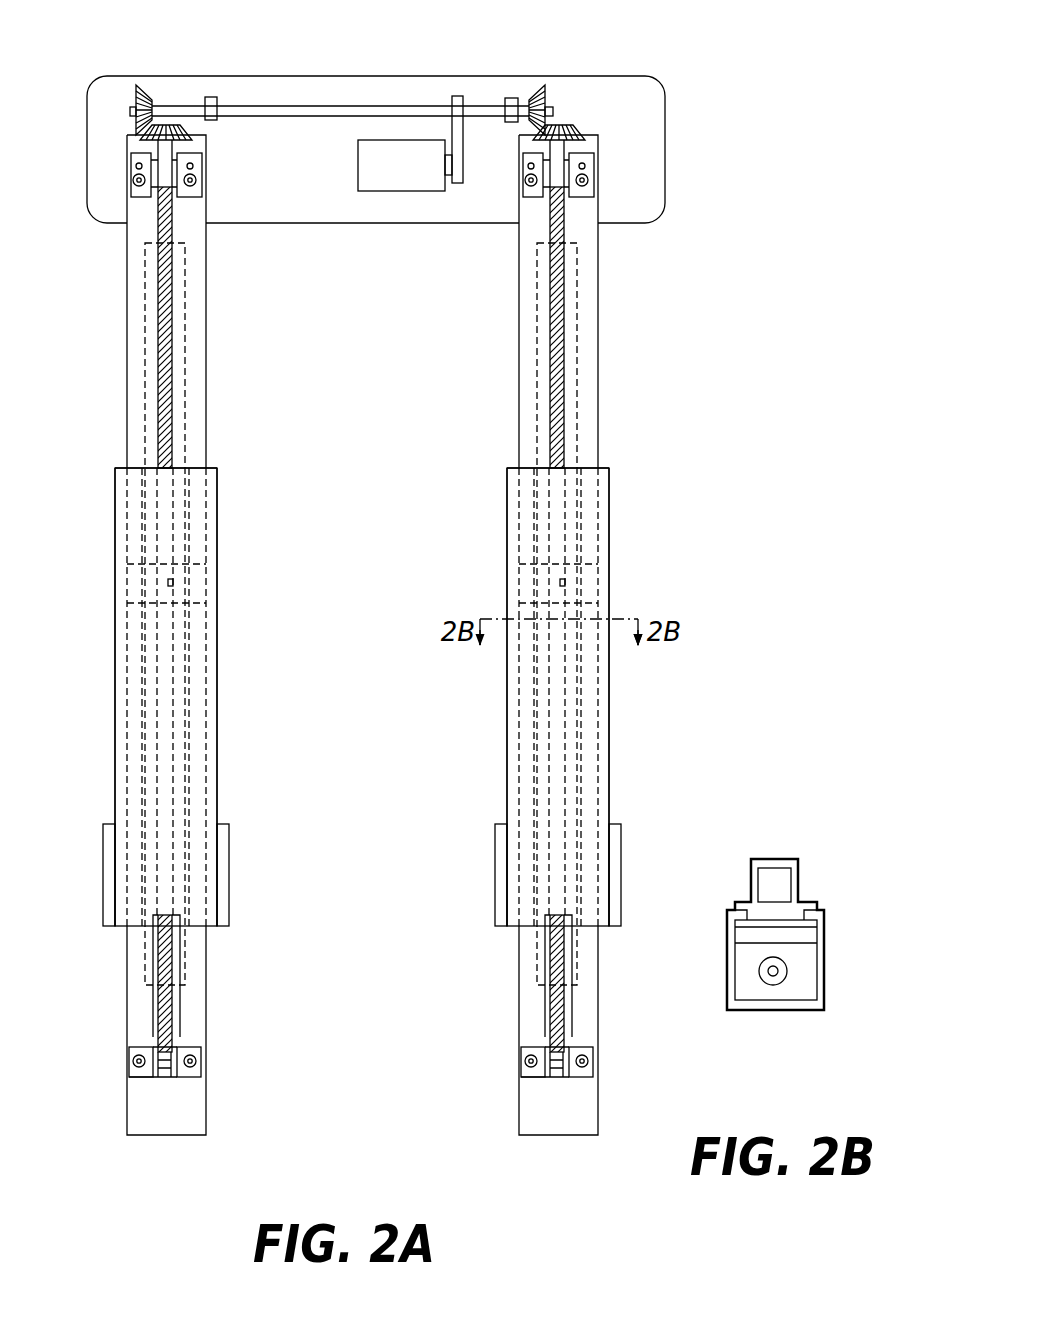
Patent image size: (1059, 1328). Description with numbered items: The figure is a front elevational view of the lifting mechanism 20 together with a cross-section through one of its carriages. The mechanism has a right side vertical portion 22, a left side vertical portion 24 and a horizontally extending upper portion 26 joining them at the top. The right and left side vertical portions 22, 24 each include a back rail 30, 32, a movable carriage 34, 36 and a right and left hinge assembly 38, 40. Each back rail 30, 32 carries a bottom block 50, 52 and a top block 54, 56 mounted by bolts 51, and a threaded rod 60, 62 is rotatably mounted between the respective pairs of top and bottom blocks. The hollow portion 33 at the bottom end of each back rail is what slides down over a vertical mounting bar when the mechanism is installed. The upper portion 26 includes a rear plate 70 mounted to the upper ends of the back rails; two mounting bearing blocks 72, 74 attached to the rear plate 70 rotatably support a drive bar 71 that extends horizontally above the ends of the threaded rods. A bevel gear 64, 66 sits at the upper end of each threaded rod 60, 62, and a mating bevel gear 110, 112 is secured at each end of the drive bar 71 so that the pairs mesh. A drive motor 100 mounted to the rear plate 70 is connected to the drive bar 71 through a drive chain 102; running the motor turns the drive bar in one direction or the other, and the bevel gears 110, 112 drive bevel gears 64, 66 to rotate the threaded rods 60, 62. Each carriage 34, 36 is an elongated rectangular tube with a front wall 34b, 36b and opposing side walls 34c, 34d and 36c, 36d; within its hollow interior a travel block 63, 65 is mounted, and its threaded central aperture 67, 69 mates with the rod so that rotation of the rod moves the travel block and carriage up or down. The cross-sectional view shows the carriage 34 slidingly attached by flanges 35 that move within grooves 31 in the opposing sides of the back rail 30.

In FIG. 2A, the lifting mechanism 20 is at (392, 1075).
In FIG. 2A, the right side vertical portion 22 is at (484, 510).
In FIG. 2A, the left side vertical portion 24 is at (285, 740).
In FIG. 2A, the horizontally extending upper portion 26 is at (695, 115).
In FIG. 2A, the back rail 30 is at (526, 1030).
In FIG. 2B, the back rail 30 is at (800, 877).
In FIG. 2B, the grooves 31 is at (818, 906).
In FIG. 2A, the back rail 32 is at (202, 1012).
In FIG. 2B, the hollow portion 33 is at (773, 870).
In FIG. 2A, the movable carriage 34 is at (518, 697).
In FIG. 2B, the movable carriage 34 is at (822, 1024).
In FIG. 2A, the front wall 34b is at (595, 478).
In FIG. 2A, the side wall 34c is at (639, 697).
In FIG. 2A, the side wall 34d is at (479, 697).
In FIG. 2B, the flanges 35 is at (742, 913).
In FIG. 2A, the movable carriage 36 is at (217, 712).
In FIG. 2A, the front wall 36b is at (203, 478).
In FIG. 2A, the side wall 36c is at (215, 760).
In FIG. 2A, the side wall 36d is at (116, 728).
In FIG. 2A, the right hinge assembly 38 is at (595, 867).
In FIG. 2A, the left hinge assembly 40 is at (103, 860).
In FIG. 2A, the bottom block 50 is at (506, 1097).
In FIG. 2A, the bolts 51 is at (196, 180).
In FIG. 2A, the bottom block 52 is at (132, 1078).
In FIG. 2A, the top block 54 is at (576, 301).
In FIG. 2A, the top block 56 is at (135, 200).
In FIG. 2A, the threaded rod 60 is at (519, 596).
In FIG. 2B, the threaded rod 60 is at (782, 969).
In FIG. 2A, the threaded rod 62 is at (160, 372).
In FIG. 2A, the travel block 63 is at (591, 583).
In FIG. 2A, the bevel gear 64 is at (580, 128).
In FIG. 2A, the travel block 65 is at (198, 583).
In FIG. 2A, the bevel gear 66 is at (186, 128).
In FIG. 2A, the threaded central aperture 67 is at (610, 557).
In FIG. 2B, the threaded central aperture 67 is at (775, 985).
In FIG. 2A, the threaded central aperture 69 is at (170, 579).
In FIG. 2A, the rear plate 70 is at (628, 76).
In FIG. 2A, the drive bar 71 is at (285, 106).
In FIG. 2A, the mounting bearing block 72 is at (510, 98).
In FIG. 2A, the mounting bearing block 74 is at (211, 97).
In FIG. 2A, the drive motor 100 is at (410, 191).
In FIG. 2A, the drive chain 102 is at (455, 96).
In FIG. 2A, the mating bevel gear 110 is at (540, 85).
In FIG. 2A, the mating bevel gear 112 is at (143, 85).